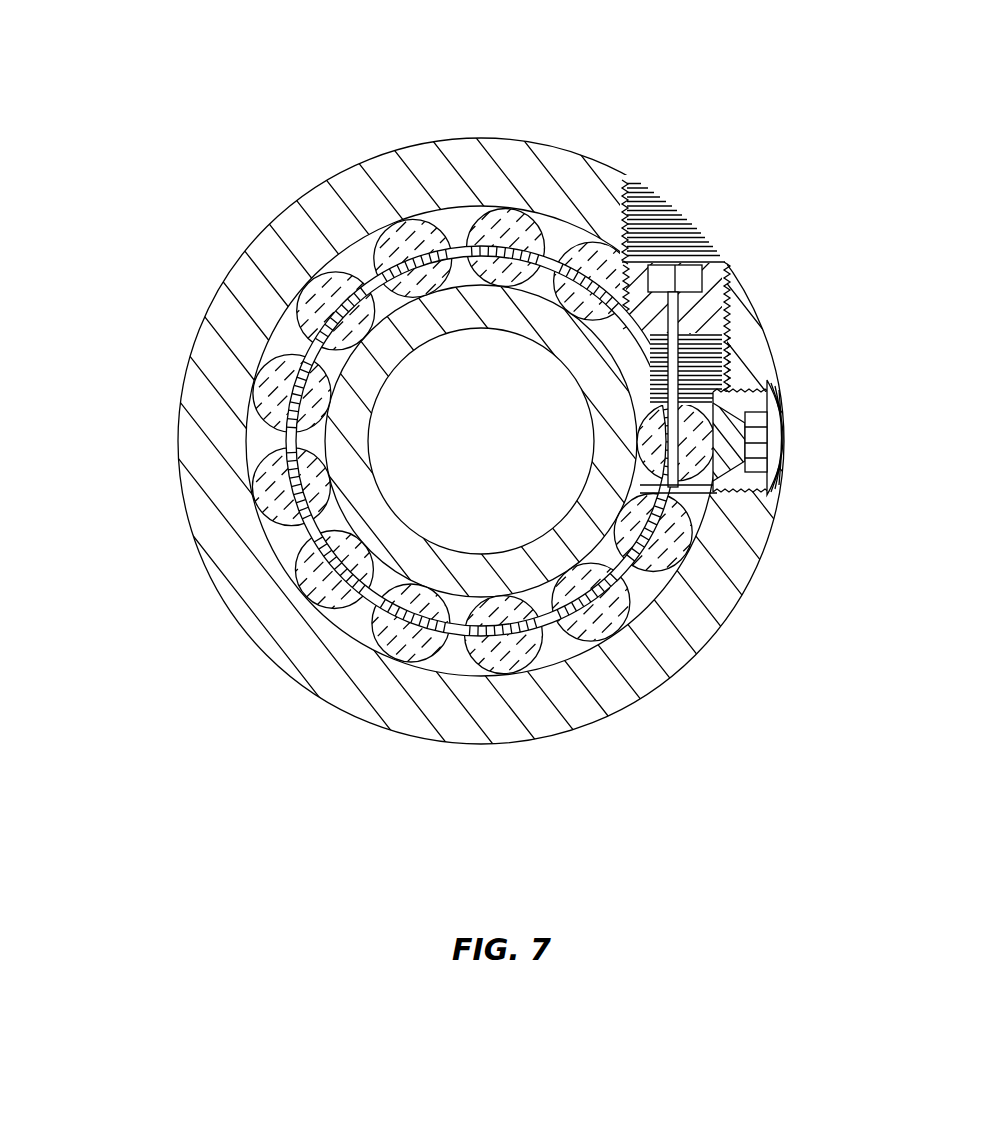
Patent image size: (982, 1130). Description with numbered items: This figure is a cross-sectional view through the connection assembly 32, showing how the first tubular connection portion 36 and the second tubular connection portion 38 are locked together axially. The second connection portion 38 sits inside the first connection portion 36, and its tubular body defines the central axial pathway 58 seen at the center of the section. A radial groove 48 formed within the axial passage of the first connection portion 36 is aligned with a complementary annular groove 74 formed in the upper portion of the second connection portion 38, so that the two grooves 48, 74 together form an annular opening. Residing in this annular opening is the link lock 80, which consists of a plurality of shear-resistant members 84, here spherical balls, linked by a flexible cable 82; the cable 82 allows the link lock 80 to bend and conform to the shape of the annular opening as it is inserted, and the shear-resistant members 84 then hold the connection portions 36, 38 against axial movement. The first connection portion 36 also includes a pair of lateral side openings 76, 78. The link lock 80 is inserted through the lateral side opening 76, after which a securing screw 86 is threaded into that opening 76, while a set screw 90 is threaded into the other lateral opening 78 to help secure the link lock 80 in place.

The connection assembly 32 is at (462, 439).
The first tubular connection portion 36 is at (483, 439).
The second tubular connection portion 38 is at (483, 439).
The radial groove 48 is at (337, 262).
The central axial pathway 58 is at (499, 463).
The annular groove 74 is at (340, 368).
The lateral side opening 76 is at (729, 330).
The lateral side opening 78 is at (772, 421).
The link lock 80 is at (483, 538).
The flexible cable 82 is at (457, 642).
The shear-resistant members 84 is at (476, 217).
The securing screw 86 is at (688, 284).
The set screw 90 is at (749, 443).